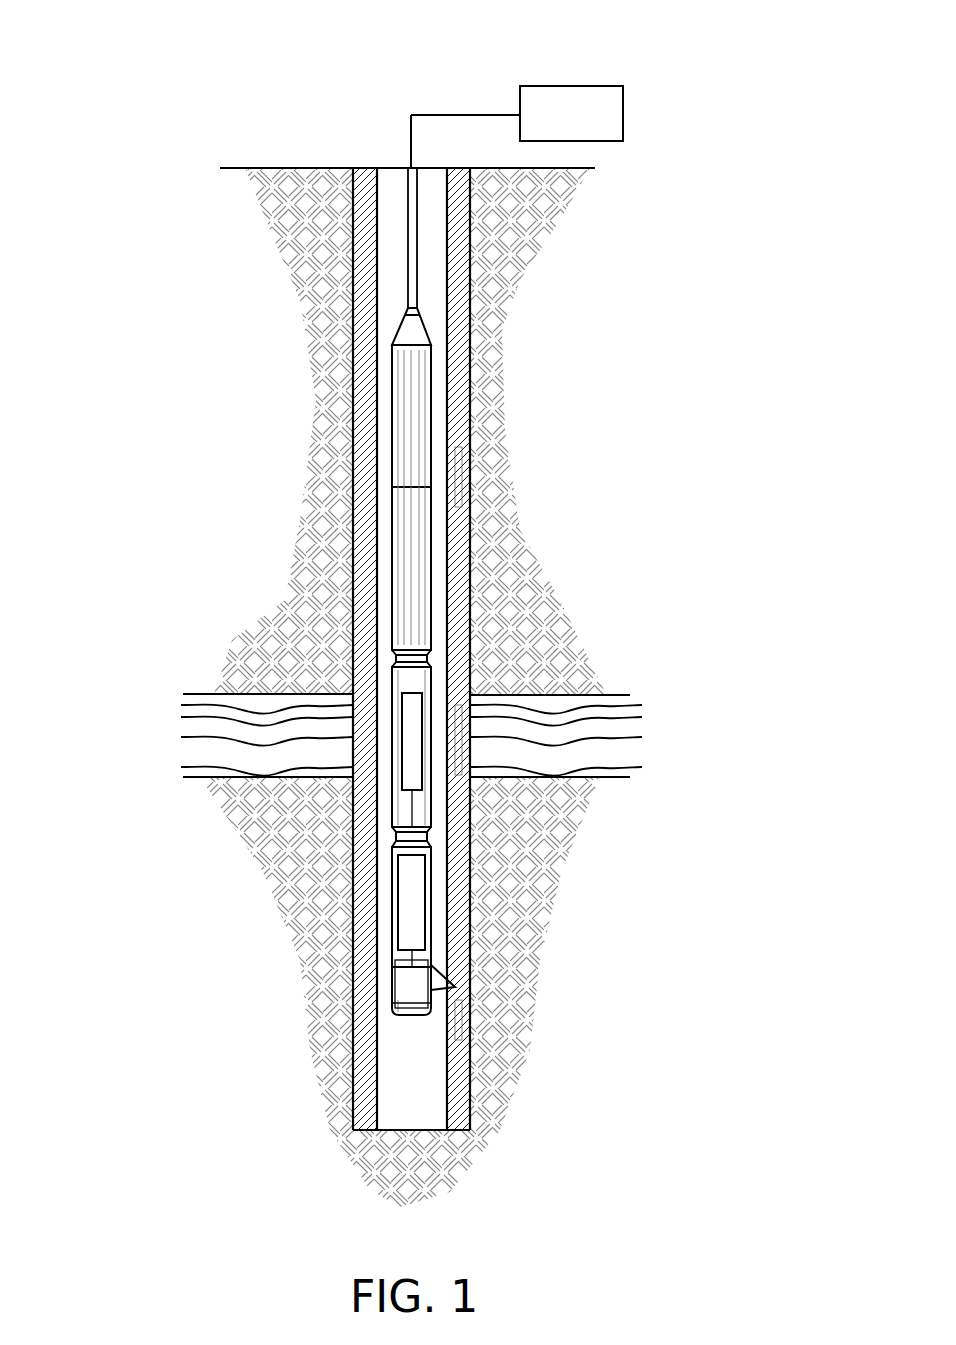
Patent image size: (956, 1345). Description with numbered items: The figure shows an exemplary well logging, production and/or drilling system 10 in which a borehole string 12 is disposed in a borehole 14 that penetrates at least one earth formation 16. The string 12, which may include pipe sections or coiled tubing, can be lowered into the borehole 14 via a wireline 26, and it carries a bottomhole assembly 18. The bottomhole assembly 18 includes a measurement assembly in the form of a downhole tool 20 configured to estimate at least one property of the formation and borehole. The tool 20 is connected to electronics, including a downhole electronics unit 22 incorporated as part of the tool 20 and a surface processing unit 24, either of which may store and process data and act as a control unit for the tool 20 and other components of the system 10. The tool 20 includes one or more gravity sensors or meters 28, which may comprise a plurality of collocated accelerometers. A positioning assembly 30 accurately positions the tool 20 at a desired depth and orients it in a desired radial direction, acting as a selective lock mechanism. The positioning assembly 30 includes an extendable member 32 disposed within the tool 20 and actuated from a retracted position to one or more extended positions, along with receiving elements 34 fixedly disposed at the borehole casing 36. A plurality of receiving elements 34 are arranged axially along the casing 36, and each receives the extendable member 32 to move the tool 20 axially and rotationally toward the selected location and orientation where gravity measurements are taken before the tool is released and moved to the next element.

The well logging, production and/or drilling system 10 is at (190, 94).
The borehole string 12 is at (392, 462).
The borehole 14 is at (440, 214).
The earth formation 16 is at (182, 722).
The bottomhole assembly 18 is at (446, 855).
The downhole tool 20 is at (410, 952).
The electronics unit 22 is at (410, 772).
The surface processing unit 24 is at (576, 98).
The wireline 26 is at (405, 240).
The gravity sensor 28 is at (410, 895).
The positioning assembly 30 is at (428, 1036).
The extendable member 32 is at (442, 972).
The receiving element 34 is at (458, 465).
The borehole casing 36 is at (458, 380).